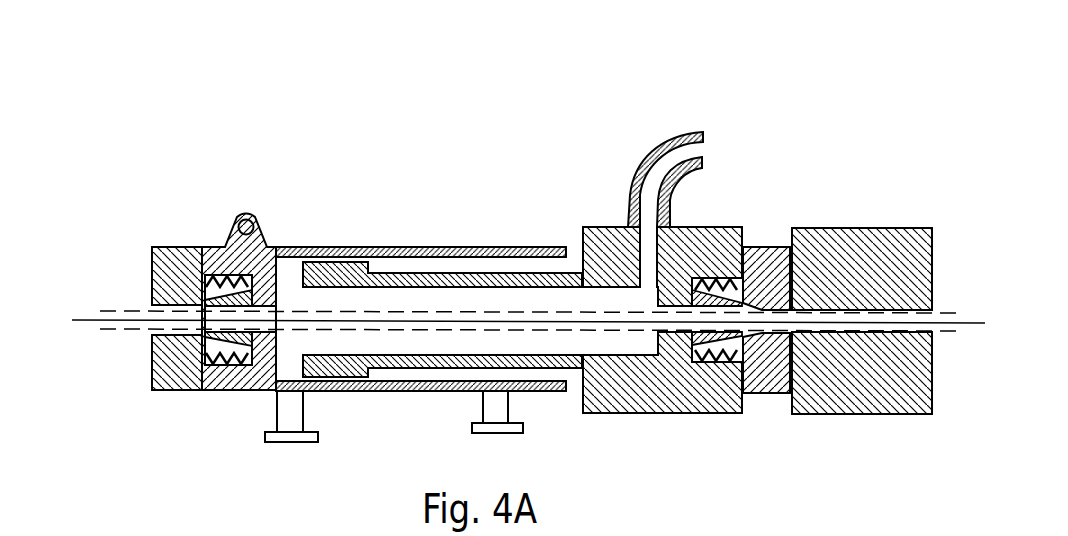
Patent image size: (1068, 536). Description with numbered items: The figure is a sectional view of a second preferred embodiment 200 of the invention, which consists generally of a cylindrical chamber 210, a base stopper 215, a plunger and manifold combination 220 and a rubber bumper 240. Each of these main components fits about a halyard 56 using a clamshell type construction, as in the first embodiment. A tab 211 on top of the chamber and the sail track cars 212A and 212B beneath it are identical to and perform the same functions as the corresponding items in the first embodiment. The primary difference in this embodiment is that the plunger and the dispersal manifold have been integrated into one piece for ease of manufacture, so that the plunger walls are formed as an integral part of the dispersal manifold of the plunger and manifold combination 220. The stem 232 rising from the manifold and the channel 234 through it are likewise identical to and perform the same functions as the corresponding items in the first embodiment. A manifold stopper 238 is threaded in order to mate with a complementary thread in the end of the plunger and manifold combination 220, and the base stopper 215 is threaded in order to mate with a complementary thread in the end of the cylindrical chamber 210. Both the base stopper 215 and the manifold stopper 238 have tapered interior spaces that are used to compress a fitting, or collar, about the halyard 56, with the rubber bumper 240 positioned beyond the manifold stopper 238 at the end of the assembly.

The second preferred embodiment 200 is at (961, 109).
The halyard 56 is at (117, 327).
The base stopper 215 is at (150, 258).
The tab 211 is at (235, 222).
The cylindrical chamber 210 is at (347, 250).
The sail track car 212A is at (283, 413).
The sail track car 212B is at (503, 412).
The plunger and manifold combination 220 is at (583, 237).
The stem 232 is at (638, 185).
The channel 234 is at (697, 152).
The manifold stopper 238 is at (763, 385).
The rubber bumper 240 is at (843, 257).